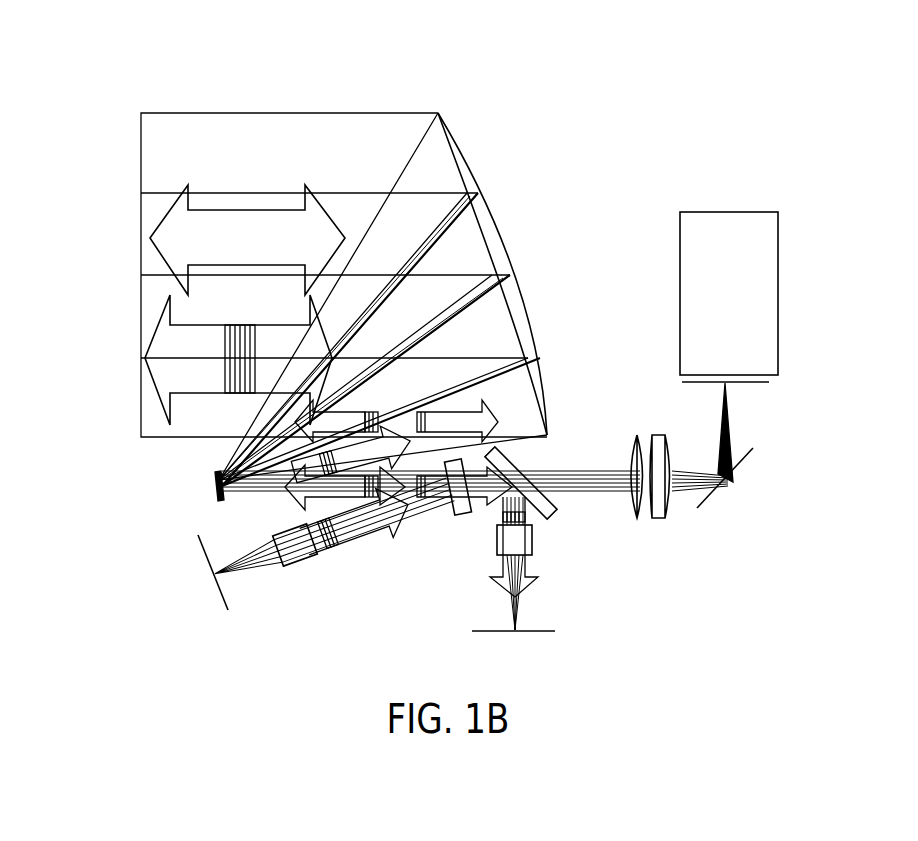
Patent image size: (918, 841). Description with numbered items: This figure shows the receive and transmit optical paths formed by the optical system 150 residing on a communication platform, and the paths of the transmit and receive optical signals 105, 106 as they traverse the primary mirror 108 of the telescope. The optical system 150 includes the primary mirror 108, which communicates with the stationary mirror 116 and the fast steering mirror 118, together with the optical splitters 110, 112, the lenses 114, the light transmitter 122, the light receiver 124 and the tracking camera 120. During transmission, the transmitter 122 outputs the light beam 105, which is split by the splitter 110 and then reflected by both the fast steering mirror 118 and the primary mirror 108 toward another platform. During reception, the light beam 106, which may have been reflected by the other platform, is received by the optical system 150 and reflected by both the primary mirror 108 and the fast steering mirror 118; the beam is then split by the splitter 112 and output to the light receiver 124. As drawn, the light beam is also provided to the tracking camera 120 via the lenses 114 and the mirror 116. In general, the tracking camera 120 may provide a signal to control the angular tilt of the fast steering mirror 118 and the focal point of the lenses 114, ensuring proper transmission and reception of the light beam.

The optical system 150 is at (513, 60).
The transmit optical signal 105 is at (157, 231).
The receive optical signal 106 is at (204, 305).
The primary mirror 108 is at (495, 230).
The optical splitter 110 is at (462, 515).
The optical splitter 112 is at (510, 462).
The lenses 114 is at (662, 518).
The stationary mirror 116 is at (727, 480).
The fast steering mirror 118 is at (213, 482).
The tracking camera 120 is at (780, 295).
The light transmitter 122 is at (300, 566).
The light receiver 124 is at (532, 543).